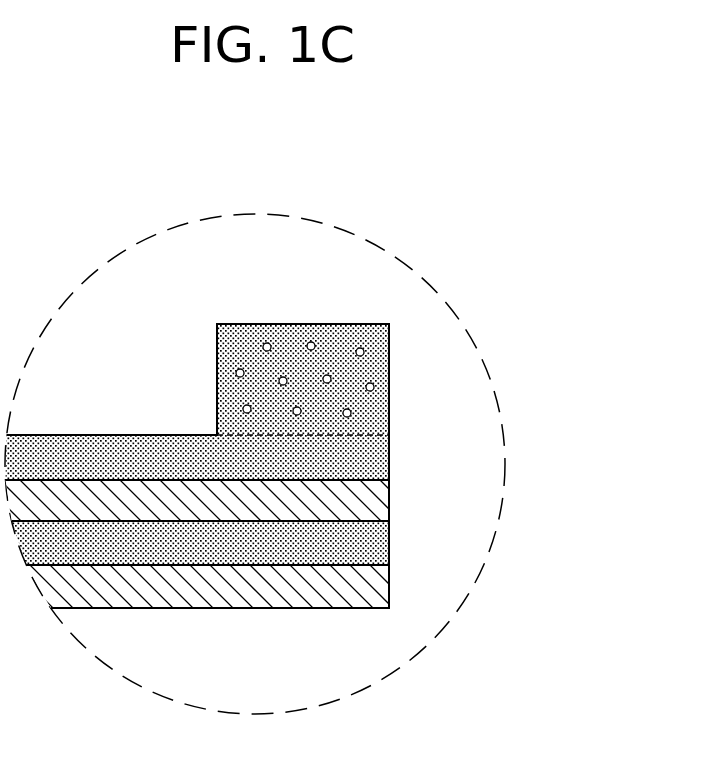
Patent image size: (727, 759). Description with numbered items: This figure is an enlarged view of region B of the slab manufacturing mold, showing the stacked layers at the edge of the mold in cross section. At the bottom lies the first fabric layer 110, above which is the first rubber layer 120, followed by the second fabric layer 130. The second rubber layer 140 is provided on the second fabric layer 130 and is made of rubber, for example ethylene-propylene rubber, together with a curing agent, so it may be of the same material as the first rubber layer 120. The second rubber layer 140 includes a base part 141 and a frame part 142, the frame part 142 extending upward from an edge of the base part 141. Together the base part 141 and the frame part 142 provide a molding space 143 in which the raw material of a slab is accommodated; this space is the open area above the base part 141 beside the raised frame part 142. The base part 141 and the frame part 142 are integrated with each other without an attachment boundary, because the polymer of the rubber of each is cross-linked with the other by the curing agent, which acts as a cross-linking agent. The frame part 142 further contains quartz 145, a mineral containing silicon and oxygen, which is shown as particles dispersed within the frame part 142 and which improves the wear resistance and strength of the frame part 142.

The region B is at (341, 229).
The first fabric layer 110 is at (372, 582).
The first rubber layer 120 is at (372, 542).
The second fabric layer 130 is at (372, 497).
The second rubber layer 140 is at (335, 402).
The base part 141 is at (372, 455).
The frame part 142 is at (407, 379).
The molding space 143 is at (123, 370).
The quartz 145 is at (364, 351).